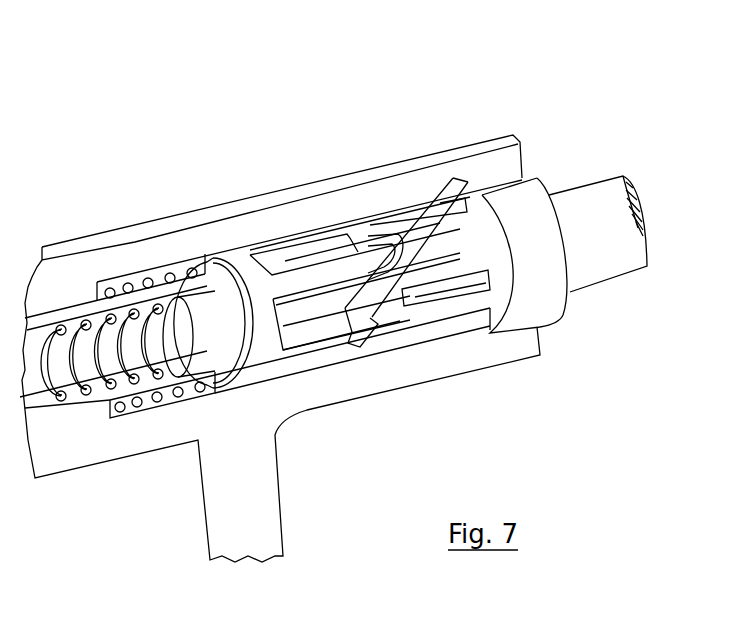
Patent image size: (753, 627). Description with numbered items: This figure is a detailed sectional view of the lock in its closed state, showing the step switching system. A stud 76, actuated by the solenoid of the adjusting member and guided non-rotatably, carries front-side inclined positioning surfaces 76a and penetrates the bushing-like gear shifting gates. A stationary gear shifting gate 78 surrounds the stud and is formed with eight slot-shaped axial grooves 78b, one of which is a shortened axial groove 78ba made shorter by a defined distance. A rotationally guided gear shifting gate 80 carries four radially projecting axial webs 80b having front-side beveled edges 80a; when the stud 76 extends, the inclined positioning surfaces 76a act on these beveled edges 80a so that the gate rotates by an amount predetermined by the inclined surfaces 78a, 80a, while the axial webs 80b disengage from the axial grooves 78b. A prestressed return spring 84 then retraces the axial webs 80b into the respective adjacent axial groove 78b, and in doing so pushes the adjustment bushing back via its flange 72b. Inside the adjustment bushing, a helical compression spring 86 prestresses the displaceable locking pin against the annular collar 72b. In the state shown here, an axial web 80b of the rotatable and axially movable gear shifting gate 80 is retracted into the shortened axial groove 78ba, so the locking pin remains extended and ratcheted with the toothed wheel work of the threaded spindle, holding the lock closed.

The flange 72b is at (205, 258).
The stud 76 is at (585, 198).
The inclined positioning surfaces 76a is at (456, 200).
The stationary gear shifting gate 78 is at (528, 188).
The inclined surfaces 78a is at (430, 222).
The axial grooves 78b is at (389, 312).
The shortened axial groove 78ba is at (412, 232).
The rotationally guided gear shifting gate 80 is at (243, 262).
The beveled edges 80a is at (402, 232).
The axial webs 80b is at (288, 290).
The return spring 84 is at (160, 268).
The helical compression spring 86 is at (72, 328).